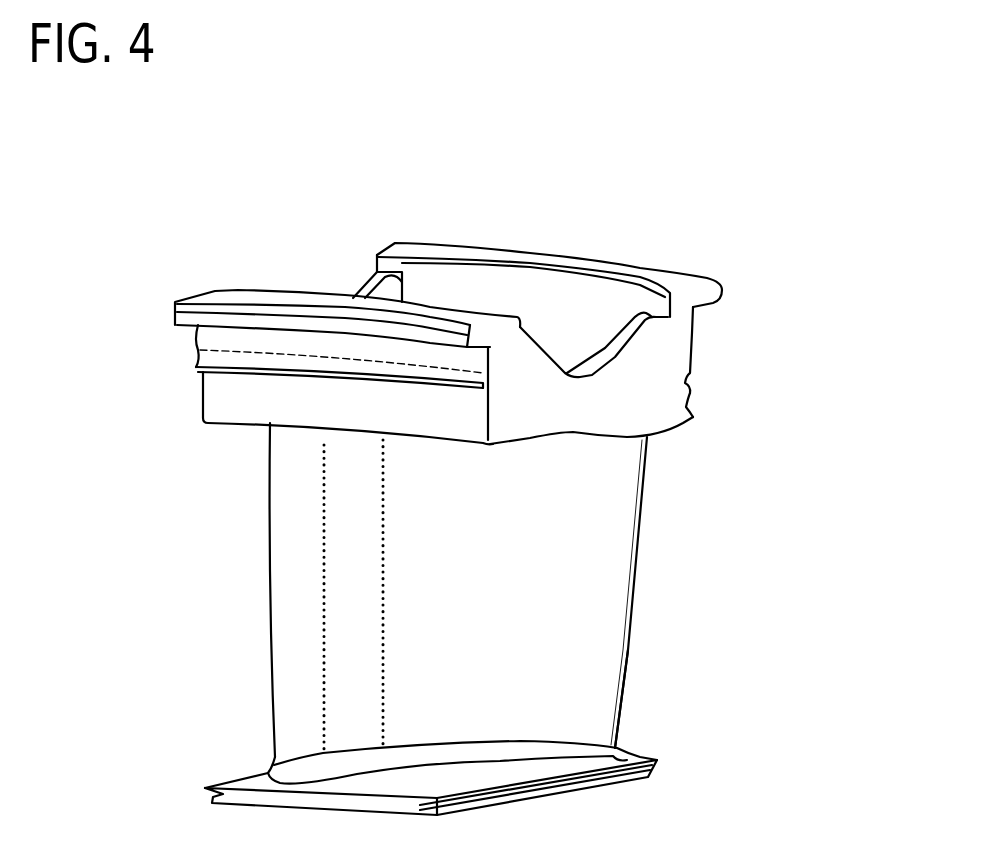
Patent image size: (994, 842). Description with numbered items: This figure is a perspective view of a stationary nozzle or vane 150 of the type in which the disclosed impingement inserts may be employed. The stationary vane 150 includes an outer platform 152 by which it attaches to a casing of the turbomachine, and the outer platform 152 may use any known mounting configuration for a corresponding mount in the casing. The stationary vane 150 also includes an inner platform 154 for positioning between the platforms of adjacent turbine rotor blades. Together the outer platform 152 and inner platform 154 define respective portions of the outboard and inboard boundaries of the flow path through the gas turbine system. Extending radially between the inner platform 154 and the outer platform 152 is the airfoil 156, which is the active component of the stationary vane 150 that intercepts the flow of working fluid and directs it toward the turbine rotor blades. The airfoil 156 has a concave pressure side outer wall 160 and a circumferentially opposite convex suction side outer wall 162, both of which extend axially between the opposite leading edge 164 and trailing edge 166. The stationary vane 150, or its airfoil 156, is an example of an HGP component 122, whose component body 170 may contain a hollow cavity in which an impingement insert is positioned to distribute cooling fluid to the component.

The HGP component 122 is at (158, 298).
The stationary vane 150 is at (749, 292).
The outer platform 152 is at (653, 373).
The inner platform 154 is at (543, 766).
The airfoil 156 is at (661, 502).
The pressure side outer wall 160 is at (532, 611).
The suction side outer wall 162 is at (653, 580).
The leading edge 164 is at (287, 433).
The trailing edge 166 is at (627, 673).
The component body 170 is at (353, 689).